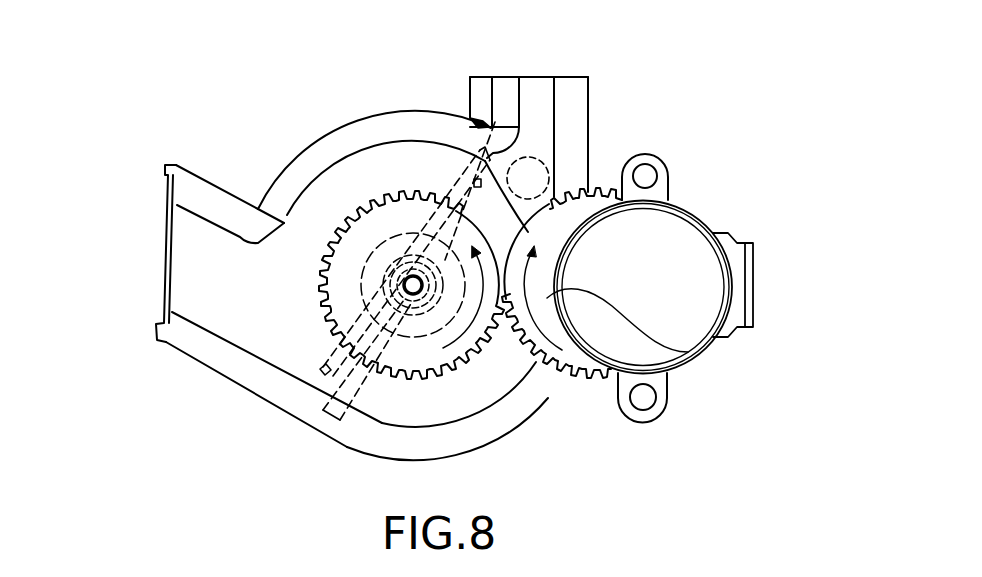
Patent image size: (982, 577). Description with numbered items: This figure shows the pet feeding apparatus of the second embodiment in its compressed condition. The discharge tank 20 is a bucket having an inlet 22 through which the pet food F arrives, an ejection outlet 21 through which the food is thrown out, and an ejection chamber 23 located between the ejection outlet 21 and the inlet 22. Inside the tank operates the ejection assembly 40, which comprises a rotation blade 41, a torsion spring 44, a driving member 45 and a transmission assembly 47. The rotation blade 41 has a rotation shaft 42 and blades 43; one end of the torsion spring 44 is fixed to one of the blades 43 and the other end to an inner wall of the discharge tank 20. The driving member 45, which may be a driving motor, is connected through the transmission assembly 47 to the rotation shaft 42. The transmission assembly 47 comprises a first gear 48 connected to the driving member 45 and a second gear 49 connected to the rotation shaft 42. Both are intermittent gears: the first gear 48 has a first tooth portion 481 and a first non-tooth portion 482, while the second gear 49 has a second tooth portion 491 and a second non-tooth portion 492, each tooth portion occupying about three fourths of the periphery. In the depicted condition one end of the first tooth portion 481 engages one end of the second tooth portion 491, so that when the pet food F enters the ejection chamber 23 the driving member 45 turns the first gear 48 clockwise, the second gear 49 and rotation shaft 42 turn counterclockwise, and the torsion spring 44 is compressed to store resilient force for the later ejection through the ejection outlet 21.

The discharge tank 20 is at (352, 122).
The ejection outlet 21 is at (165, 245).
The inlet 22 is at (529, 77).
The ejection chamber 23 is at (330, 200).
The ejection assembly 40 is at (163, 380).
The rotation blade 41 is at (213, 437).
The rotation shaft 42 is at (413, 290).
The blades 43 is at (398, 362).
The torsion spring 44 is at (323, 368).
The driving member 45 is at (678, 200).
The transmission assembly 47 is at (600, 184).
The first gear 48 is at (688, 352).
The first tooth portion 481 is at (585, 380).
The first non-tooth portion 482 is at (483, 121).
The second gear 49 is at (381, 225).
The second tooth portion 491 is at (413, 383).
The second non-tooth portion 492 is at (470, 245).
The pet food F is at (541, 150).